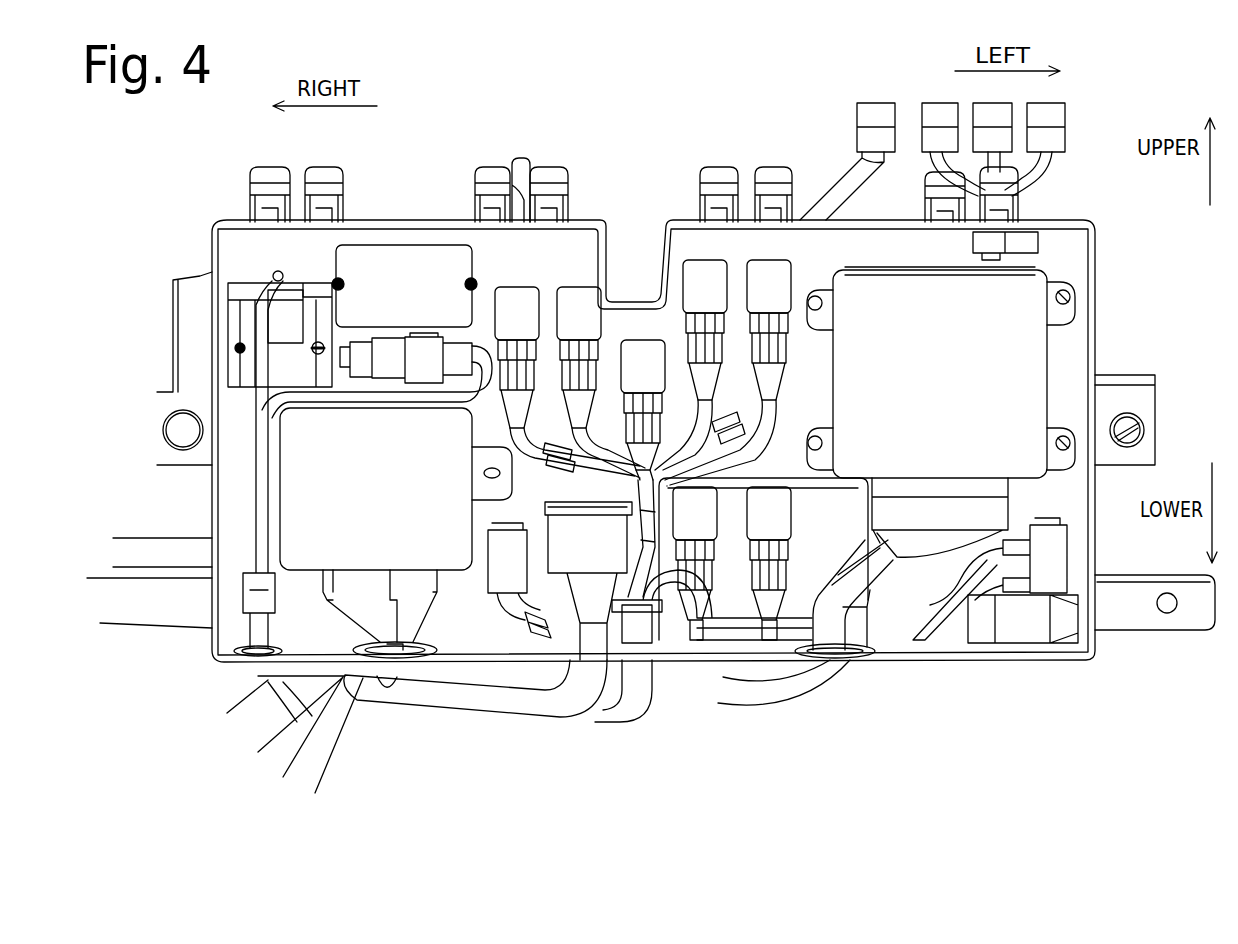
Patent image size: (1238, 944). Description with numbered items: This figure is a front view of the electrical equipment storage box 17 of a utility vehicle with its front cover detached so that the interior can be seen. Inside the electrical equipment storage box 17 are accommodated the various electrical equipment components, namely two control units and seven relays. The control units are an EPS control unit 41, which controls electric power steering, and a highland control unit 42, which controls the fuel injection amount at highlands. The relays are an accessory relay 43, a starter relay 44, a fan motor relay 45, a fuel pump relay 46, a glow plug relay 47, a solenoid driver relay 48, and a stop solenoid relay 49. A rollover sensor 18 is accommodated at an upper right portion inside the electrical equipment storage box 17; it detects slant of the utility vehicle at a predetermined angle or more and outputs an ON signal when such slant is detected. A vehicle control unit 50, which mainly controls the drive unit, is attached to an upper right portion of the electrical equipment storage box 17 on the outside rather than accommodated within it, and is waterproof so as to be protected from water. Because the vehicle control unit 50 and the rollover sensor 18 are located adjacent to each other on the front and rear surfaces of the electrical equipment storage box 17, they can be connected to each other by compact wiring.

The electrical equipment storage box 17 is at (1097, 288).
The rollover sensor 18 is at (293, 308).
The EPS control unit 41 is at (382, 505).
The highland control unit 42 is at (948, 385).
The accessory relay 43 is at (530, 330).
The starter relay 44 is at (592, 330).
The fan motor relay 45 is at (656, 383).
The fuel pump relay 46 is at (718, 303).
The glow plug relay 47 is at (782, 303).
The solenoid driver relay 48 is at (708, 530).
The stop solenoid relay 49 is at (782, 530).
The vehicle control unit 50 is at (207, 344).